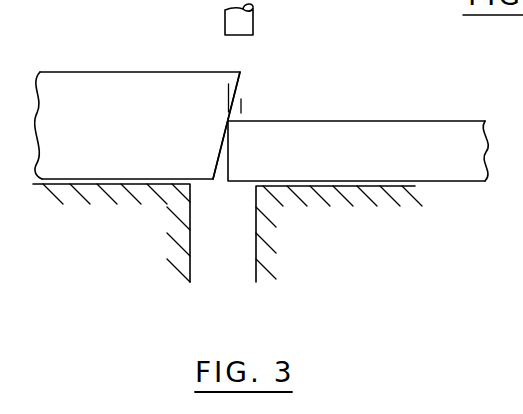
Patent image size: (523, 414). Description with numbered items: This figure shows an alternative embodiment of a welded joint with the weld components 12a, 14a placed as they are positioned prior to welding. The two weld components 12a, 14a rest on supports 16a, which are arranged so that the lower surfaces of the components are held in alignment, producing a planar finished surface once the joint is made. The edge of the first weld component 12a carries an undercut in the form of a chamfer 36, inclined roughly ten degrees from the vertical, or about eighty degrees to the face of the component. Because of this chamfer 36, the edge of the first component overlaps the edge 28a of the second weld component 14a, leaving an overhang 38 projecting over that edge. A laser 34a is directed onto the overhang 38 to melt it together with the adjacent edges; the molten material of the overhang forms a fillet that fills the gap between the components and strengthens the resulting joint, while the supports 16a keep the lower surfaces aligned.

The weld component 12a is at (137, 125).
The weld component 14a is at (358, 151).
The support 16a is at (227, 233).
The edge 28a is at (228, 156).
The laser 34a is at (236, 22).
The chamfer 36 is at (222, 149).
The overhang 38 is at (185, 91).